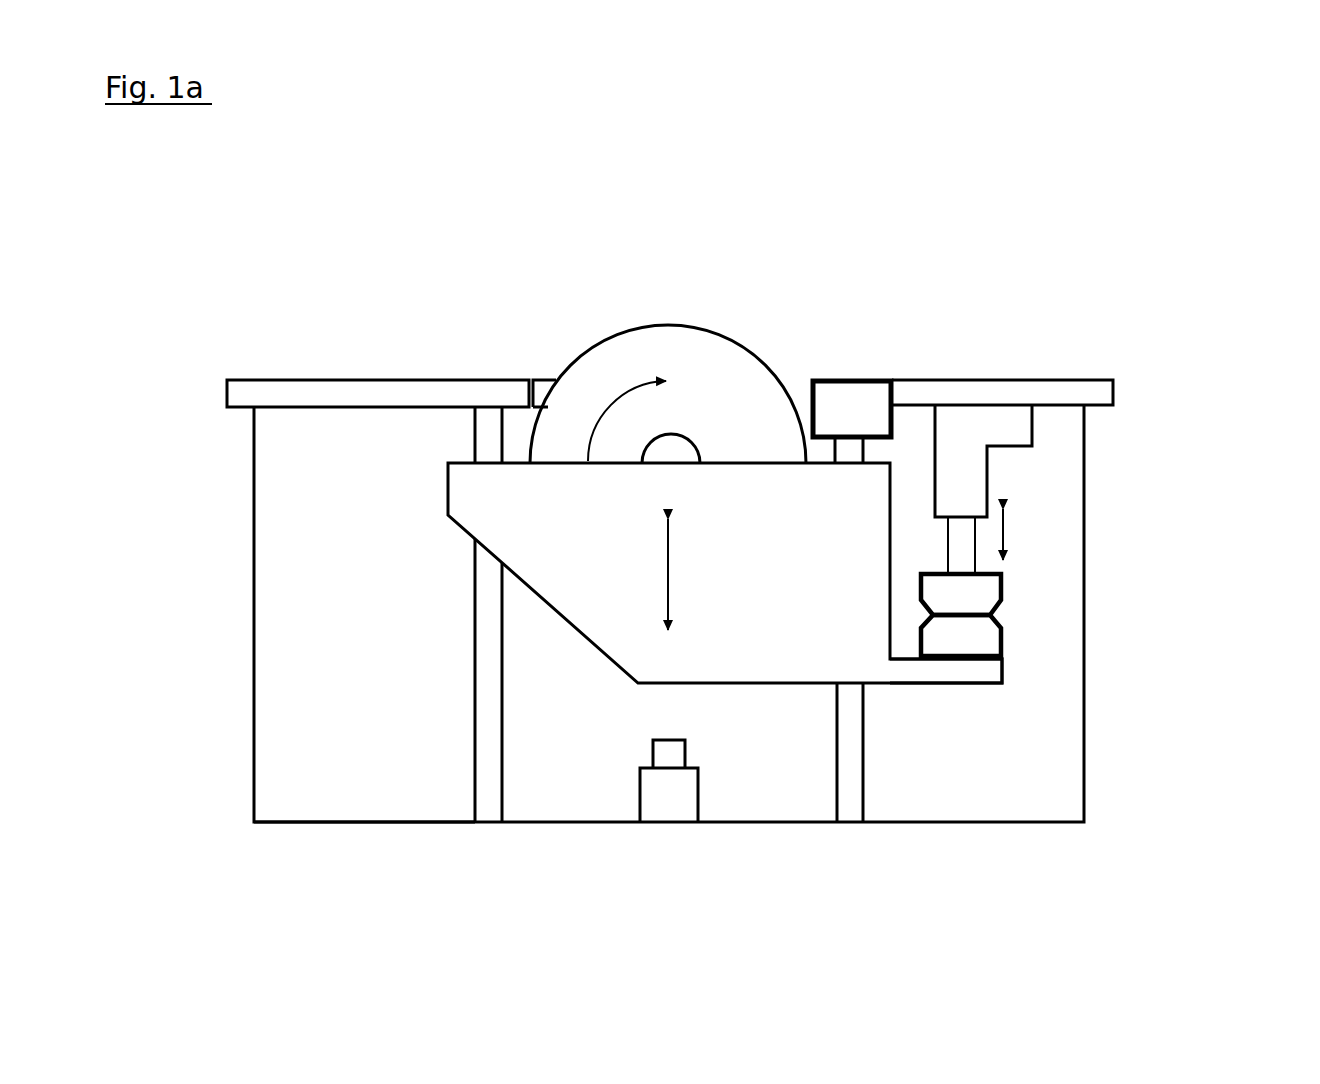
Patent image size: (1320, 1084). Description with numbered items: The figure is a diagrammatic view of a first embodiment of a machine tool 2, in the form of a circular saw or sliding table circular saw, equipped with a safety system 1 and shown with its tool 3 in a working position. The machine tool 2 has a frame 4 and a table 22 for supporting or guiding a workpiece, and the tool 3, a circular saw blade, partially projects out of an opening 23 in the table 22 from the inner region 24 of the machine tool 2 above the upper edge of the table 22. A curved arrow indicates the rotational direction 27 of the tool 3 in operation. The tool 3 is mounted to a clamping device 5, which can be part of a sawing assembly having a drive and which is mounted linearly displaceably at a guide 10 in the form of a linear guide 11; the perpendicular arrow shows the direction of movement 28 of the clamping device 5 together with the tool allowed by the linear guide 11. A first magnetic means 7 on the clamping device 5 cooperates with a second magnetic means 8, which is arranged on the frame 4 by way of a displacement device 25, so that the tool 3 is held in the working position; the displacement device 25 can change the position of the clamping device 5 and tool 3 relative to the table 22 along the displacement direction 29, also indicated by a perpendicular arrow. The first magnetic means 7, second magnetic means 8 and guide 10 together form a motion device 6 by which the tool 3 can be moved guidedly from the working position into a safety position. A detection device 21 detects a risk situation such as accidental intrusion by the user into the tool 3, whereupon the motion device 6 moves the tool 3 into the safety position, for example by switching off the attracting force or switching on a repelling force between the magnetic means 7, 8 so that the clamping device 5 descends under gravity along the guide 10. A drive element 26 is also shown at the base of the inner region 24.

The safety system 1 is at (731, 493).
The machine tool 2 is at (898, 213).
The tool 3 is at (615, 357).
The frame 4 is at (250, 557).
The clamping device 5 is at (807, 645).
The motion device 6 is at (1072, 661).
The first magnetic means 7 is at (967, 635).
The second magnetic means 8 is at (982, 592).
The guide 10 is at (894, 712).
The linear guide 11 is at (850, 728).
The detection device 21 is at (836, 430).
The table 22 is at (358, 380).
The opening 23 is at (545, 372).
The inner region 24 is at (322, 785).
The displacement device 25 is at (968, 428).
The drive 26 is at (670, 800).
The rotational direction 27 is at (600, 417).
The direction of movement 28 is at (672, 568).
The displacement direction 29 is at (1005, 535).